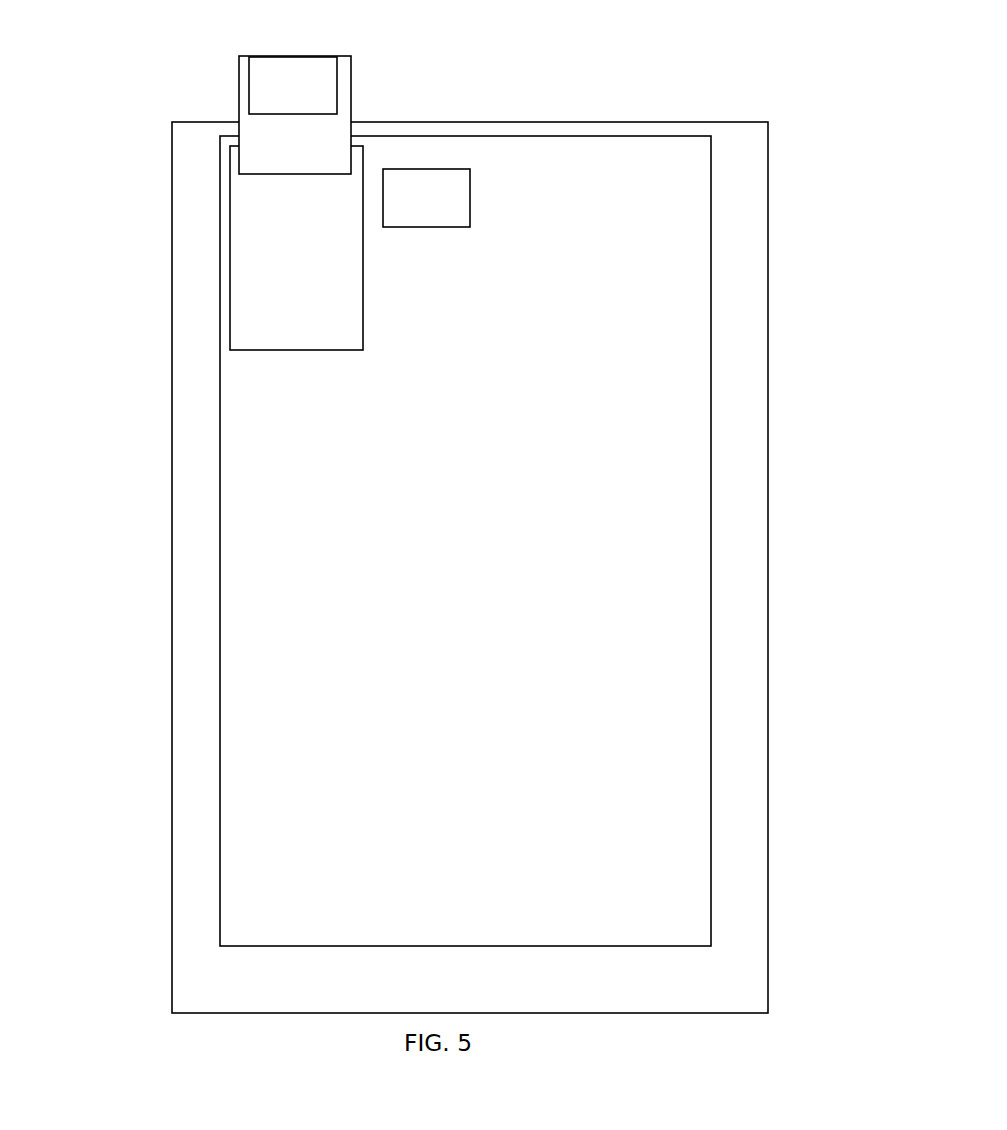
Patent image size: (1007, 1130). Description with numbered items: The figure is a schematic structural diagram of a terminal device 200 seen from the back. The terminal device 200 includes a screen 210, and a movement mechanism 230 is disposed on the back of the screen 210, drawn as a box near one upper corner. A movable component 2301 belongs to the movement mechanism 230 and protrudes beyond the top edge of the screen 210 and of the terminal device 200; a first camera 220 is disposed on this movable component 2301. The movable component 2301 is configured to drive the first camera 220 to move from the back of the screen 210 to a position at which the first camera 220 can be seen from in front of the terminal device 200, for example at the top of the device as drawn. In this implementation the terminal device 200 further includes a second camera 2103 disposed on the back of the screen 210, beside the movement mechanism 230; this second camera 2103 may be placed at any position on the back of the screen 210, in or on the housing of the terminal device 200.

The terminal device 200 is at (472, 122).
The screen 210 is at (711, 730).
The first camera 220 is at (252, 78).
The movement mechanism 230 is at (230, 322).
The movable component 2301 is at (255, 135).
The second camera 2103 is at (468, 169).